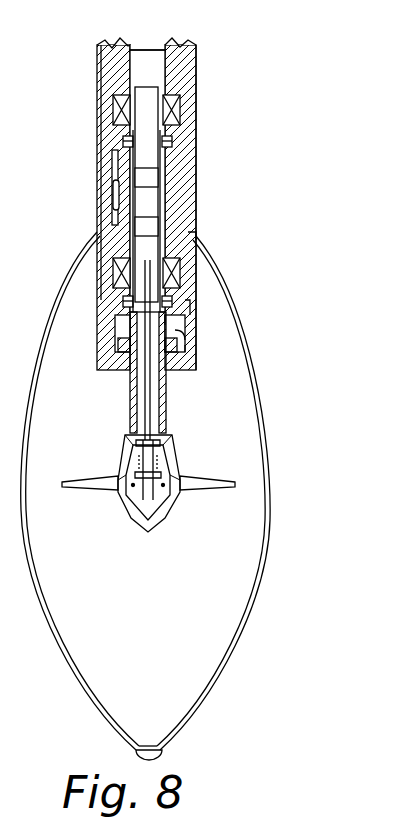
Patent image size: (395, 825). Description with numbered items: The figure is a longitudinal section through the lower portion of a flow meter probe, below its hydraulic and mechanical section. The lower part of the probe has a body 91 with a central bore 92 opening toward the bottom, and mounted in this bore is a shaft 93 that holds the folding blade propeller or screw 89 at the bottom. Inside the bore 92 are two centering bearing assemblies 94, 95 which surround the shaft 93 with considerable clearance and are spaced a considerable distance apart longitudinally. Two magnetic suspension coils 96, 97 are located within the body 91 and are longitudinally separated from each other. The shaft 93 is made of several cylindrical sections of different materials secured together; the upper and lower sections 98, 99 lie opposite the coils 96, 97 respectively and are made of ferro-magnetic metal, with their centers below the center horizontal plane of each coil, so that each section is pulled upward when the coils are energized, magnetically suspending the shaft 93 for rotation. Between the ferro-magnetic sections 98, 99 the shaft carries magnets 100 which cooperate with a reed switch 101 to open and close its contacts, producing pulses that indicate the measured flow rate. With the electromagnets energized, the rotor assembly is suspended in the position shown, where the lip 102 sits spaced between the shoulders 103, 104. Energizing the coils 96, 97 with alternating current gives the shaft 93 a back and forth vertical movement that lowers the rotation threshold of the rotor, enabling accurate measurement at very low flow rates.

The folding blade propeller 89 is at (205, 473).
The body 91 is at (185, 163).
The central bore 92 is at (160, 48).
The shaft 93 is at (147, 372).
The centering bearing assembly 94 is at (172, 140).
The centering bearing assembly 95 is at (193, 298).
The magnetic suspension coil 96 is at (196, 85).
The magnetic suspension coil 97 is at (190, 258).
The upper ferro-magnetic section 98 is at (140, 113).
The lower ferro-magnetic section 99 is at (140, 252).
The magnets 100 is at (137, 172).
The reed switch 101 is at (113, 195).
The lip 102 is at (202, 333).
The shoulder 103 is at (190, 325).
The shoulder 104 is at (197, 352).